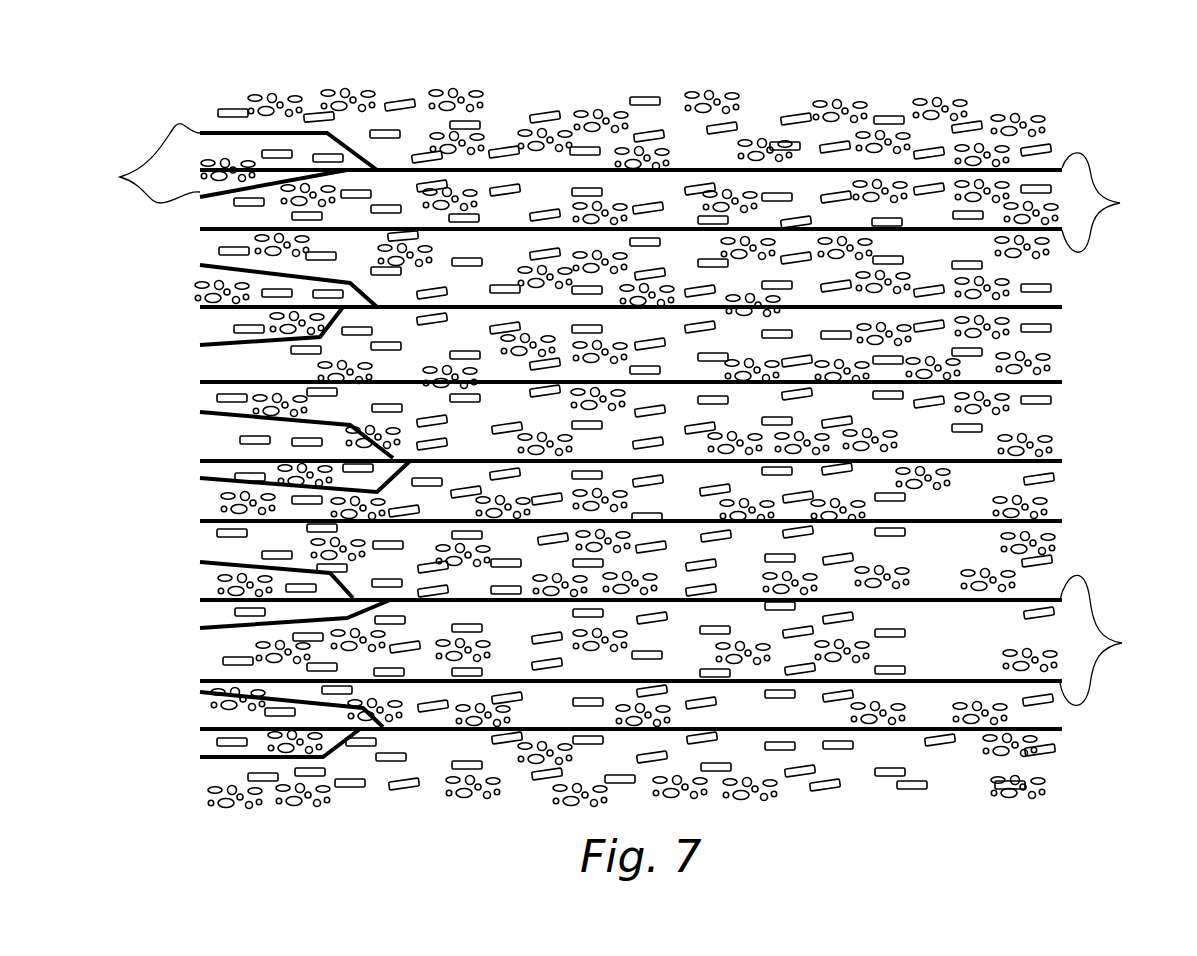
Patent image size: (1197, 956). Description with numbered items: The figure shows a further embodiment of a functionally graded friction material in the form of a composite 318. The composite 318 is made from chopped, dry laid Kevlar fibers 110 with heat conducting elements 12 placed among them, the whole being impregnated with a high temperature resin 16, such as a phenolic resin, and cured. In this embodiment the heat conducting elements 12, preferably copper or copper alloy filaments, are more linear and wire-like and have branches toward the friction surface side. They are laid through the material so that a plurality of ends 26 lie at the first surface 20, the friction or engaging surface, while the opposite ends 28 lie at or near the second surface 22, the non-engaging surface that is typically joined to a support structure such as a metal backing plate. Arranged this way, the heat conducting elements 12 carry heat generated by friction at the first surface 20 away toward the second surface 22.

The composite 318 is at (793, 79).
The heat conducting elements 12 is at (393, 168).
The chopped Kevlar fibers 110 is at (637, 102).
The high temperature resin 16 is at (1023, 118).
The ends 26 is at (143, 163).
The opposite ends 28 is at (1109, 429).
The first surface 20 is at (202, 498).
The second surface 22 is at (1066, 500).